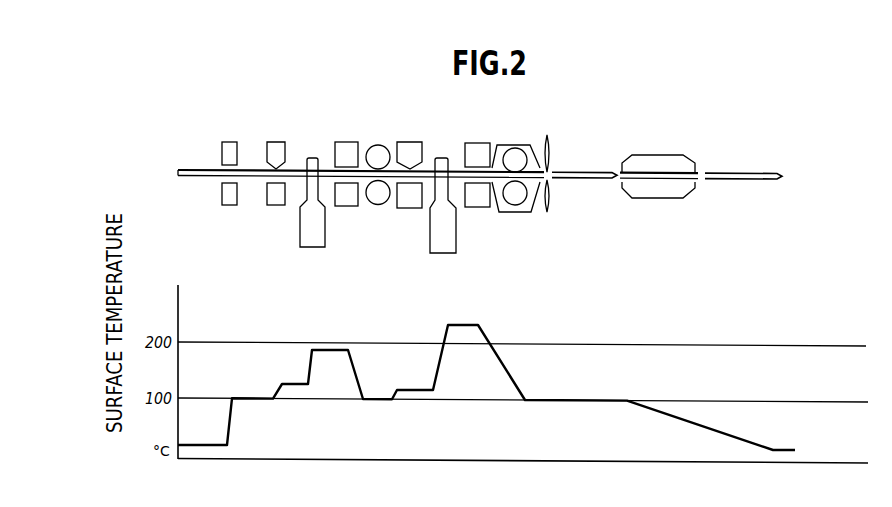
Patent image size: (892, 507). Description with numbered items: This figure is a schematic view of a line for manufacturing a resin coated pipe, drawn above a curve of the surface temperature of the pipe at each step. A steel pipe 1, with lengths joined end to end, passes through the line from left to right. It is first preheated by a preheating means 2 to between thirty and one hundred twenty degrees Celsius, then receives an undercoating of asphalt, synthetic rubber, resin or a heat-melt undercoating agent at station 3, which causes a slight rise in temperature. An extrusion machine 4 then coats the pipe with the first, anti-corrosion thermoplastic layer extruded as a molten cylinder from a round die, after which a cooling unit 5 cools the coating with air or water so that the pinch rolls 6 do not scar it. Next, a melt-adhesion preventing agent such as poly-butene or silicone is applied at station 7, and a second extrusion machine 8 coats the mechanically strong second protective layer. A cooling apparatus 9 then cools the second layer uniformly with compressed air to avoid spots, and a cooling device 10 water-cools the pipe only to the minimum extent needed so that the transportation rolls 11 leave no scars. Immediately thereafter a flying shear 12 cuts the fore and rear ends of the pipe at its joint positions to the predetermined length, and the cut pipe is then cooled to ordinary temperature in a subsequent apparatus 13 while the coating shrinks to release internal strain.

The steel pipe 1 is at (191, 178).
The preheating means 2 is at (229, 206).
The undercoating station 3 is at (276, 206).
The extrusion machine 4 is at (312, 248).
The cooling unit 5 is at (346, 207).
The pinch rolls 6 is at (378, 205).
The melt-adhesion preventing agent coating station 7 is at (409, 209).
The second extrusion machine 8 is at (443, 254).
The cooling apparatus 9 is at (477, 208).
The cooling device 10 is at (500, 213).
The transportation rolls 11 is at (517, 205).
The flying shear 12 is at (550, 212).
The heating station 13 is at (650, 199).